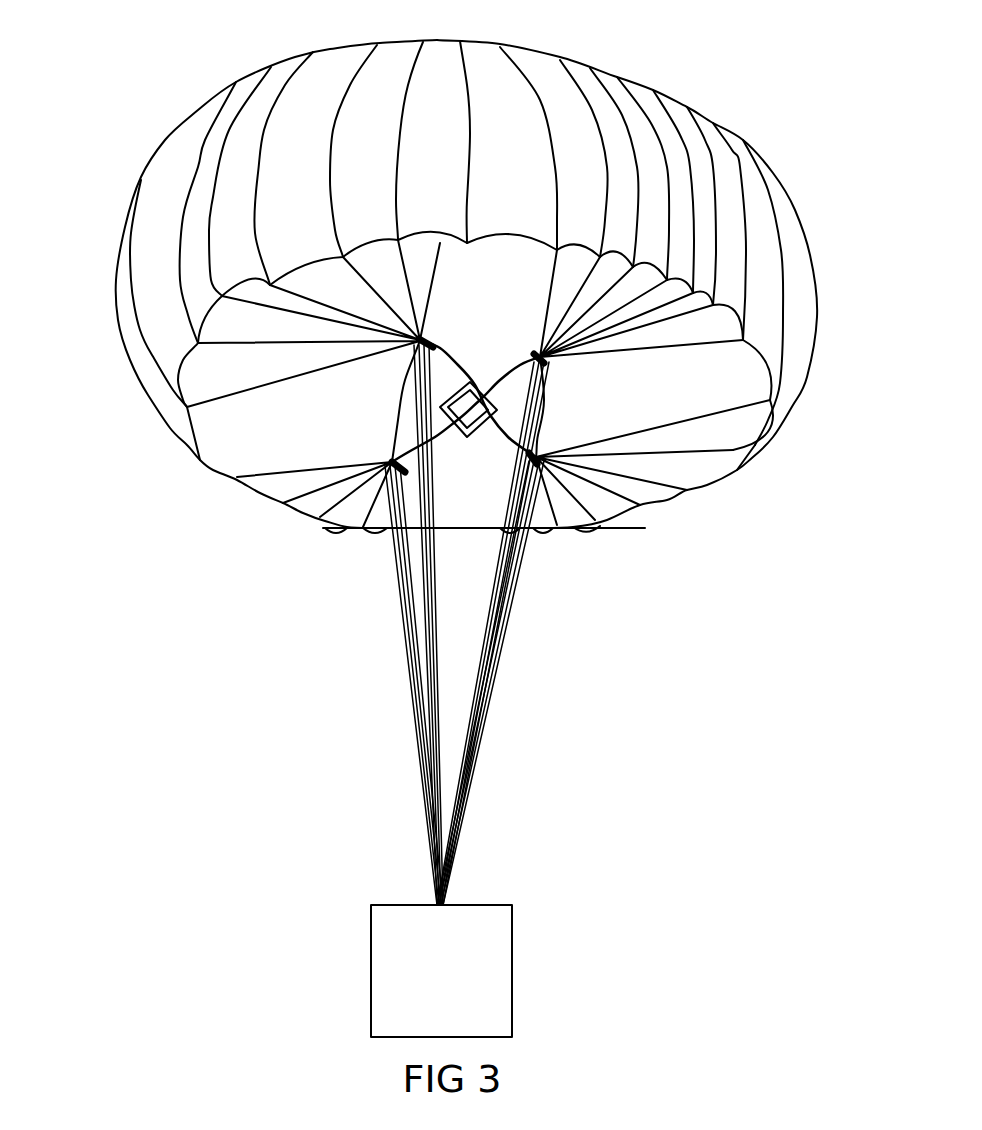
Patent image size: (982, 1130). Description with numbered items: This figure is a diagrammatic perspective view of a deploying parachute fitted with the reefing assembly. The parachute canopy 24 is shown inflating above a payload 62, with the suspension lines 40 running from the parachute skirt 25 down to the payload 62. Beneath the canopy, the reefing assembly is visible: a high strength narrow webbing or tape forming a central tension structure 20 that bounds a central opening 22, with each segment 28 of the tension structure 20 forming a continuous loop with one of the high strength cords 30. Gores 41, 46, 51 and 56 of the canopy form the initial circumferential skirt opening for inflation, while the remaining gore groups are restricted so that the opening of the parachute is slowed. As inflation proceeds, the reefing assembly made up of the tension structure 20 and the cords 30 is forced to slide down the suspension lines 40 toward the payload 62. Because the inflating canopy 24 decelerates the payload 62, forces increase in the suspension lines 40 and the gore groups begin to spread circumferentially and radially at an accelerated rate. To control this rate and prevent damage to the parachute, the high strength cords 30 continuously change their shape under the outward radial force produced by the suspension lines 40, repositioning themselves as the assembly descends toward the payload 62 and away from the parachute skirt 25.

The central tension structure 20 is at (493, 392).
The central opening 22 is at (482, 413).
The parachute canopy 24 is at (778, 172).
The parachute skirt 25 is at (742, 472).
The segment 28 is at (481, 376).
The high strength cords 30 is at (445, 340).
The suspension lines 40 is at (665, 357).
The gore 41 is at (769, 314).
The gore 46 is at (513, 103).
The gore 51 is at (182, 418).
The gore 56 is at (468, 535).
The payload 62 is at (368, 961).